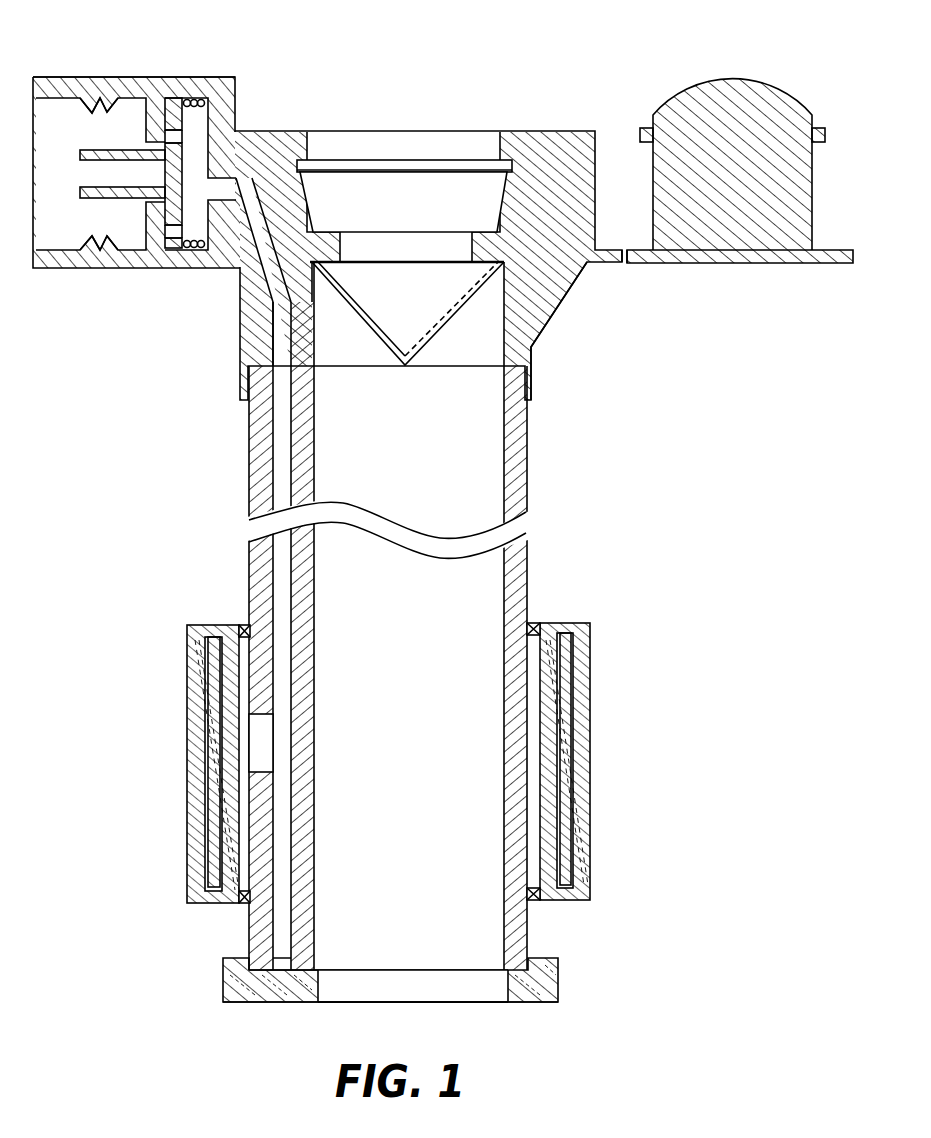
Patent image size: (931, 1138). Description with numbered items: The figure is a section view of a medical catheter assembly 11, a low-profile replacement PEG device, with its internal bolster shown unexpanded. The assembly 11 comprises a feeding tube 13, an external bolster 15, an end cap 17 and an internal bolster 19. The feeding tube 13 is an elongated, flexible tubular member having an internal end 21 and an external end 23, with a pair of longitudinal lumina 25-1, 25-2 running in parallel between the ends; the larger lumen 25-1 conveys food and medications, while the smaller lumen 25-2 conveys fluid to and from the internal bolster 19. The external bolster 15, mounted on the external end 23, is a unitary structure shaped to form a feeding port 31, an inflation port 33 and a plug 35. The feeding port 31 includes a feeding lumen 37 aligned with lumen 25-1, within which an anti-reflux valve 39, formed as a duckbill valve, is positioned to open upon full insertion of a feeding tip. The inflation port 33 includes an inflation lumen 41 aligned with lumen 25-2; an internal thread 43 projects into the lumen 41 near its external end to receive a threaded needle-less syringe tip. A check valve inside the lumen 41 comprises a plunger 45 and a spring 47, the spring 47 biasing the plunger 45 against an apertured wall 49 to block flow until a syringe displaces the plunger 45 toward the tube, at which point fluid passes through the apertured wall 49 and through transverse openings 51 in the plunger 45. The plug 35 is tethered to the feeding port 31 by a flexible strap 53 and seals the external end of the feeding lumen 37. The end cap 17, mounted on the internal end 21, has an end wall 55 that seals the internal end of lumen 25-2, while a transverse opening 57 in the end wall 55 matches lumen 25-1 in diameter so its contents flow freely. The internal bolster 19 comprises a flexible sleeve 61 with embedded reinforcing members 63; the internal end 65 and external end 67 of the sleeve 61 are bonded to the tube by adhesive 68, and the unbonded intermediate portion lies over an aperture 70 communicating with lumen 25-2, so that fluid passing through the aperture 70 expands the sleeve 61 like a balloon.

The medical catheter assembly 11 is at (695, 462).
The feeding tube 13 is at (227, 552).
The external bolster 15 is at (586, 315).
The end cap 17 is at (573, 1005).
The internal bolster 19 is at (134, 855).
The internal end 21 is at (312, 968).
The external end 23 is at (255, 368).
The lumen 25-1 is at (490, 580).
The lumen 25-2 is at (283, 446).
The feeding port 31 is at (541, 118).
The inflation port 33 is at (168, 67).
The plug 35 is at (735, 85).
The feeding lumen 37 is at (407, 190).
The anti-reflux valve 39 is at (347, 303).
The inflation lumen 41 is at (250, 262).
The internal thread 43 is at (102, 106).
The plunger 45 is at (95, 200).
The spring 47 is at (202, 103).
The apertured wall 49 is at (152, 218).
The transverse openings 51 is at (178, 212).
The flexible strap 53 is at (640, 257).
The end wall 55 is at (560, 985).
The transverse opening 57 is at (425, 985).
The flexible sleeve 61 is at (592, 760).
The reinforcing members 63 is at (565, 692).
The internal end 65 is at (570, 900).
The external end 67 is at (565, 625).
The adhesive 68 is at (240, 628).
The aperture 70 is at (265, 743).